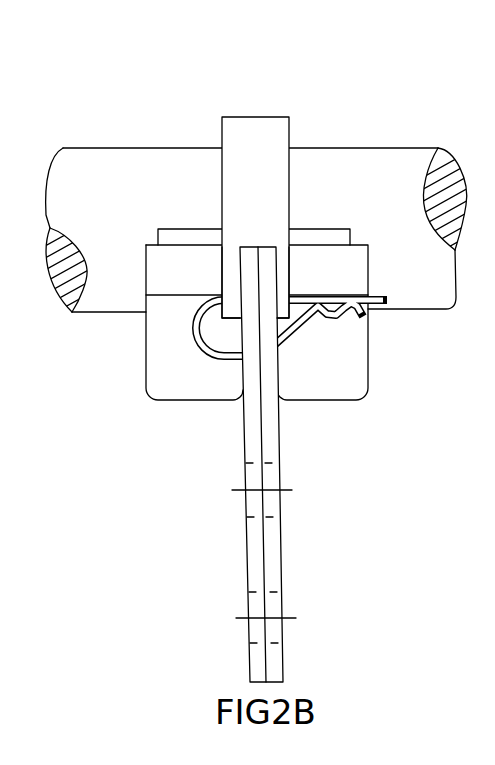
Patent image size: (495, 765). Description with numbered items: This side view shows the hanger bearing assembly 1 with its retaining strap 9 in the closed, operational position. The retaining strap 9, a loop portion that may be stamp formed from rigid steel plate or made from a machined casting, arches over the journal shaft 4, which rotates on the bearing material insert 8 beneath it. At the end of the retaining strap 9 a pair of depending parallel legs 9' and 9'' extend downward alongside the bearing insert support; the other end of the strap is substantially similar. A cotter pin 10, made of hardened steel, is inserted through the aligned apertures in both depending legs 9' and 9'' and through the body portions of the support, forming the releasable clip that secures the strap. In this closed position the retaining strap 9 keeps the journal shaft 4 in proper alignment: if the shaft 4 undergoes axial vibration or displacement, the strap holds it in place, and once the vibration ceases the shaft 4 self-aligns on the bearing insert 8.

The hanger bearing assembly 1 is at (246, 543).
The journal shaft 4 is at (388, 148).
The bearing material insert 8 is at (187, 229).
The retaining strap 9 is at (255, 180).
The depending leg 9' is at (191, 193).
The depending leg 9'' is at (328, 188).
The cotter pin 10 is at (195, 340).